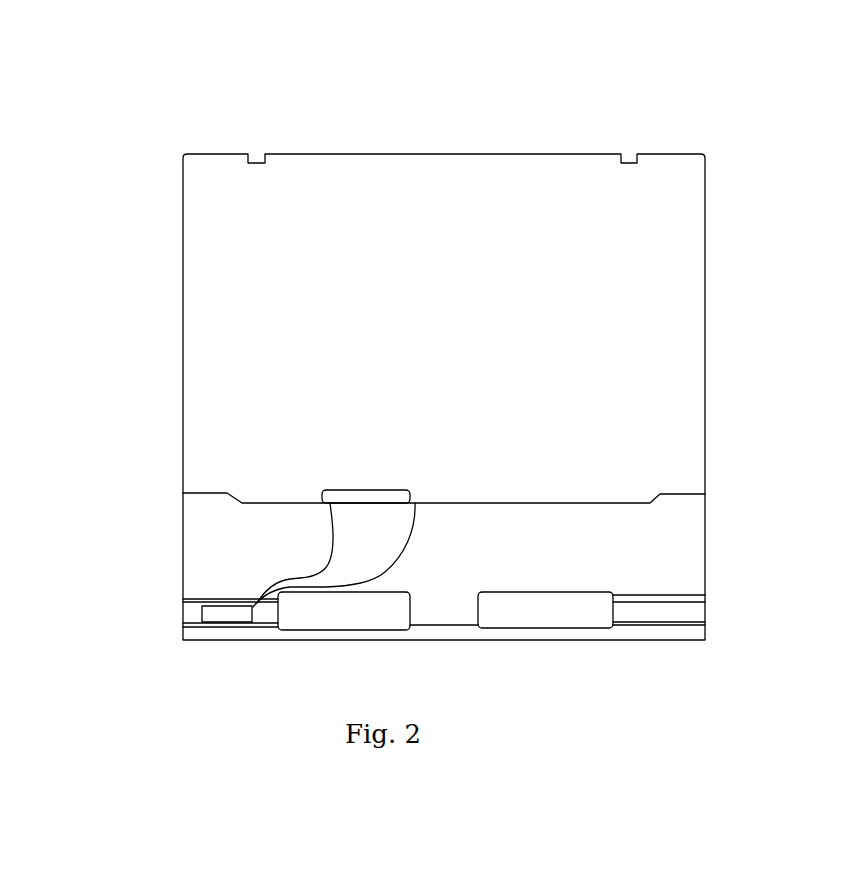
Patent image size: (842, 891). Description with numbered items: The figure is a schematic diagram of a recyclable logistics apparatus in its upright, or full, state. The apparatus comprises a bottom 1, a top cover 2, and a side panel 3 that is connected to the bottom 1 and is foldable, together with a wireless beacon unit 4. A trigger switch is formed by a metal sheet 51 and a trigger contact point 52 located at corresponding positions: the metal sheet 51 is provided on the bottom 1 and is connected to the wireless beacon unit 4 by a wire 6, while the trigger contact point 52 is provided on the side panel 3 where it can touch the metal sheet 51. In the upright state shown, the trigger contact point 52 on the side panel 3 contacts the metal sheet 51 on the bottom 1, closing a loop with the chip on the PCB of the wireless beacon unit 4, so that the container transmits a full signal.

The bottom 1 is at (282, 555).
The top cover 2 is at (208, 155).
The side panel 3 is at (212, 240).
The wireless beacon unit 4 is at (203, 625).
The metal sheet 51 is at (320, 502).
The trigger contact point 52 is at (322, 500).
The wire 6 is at (365, 485).